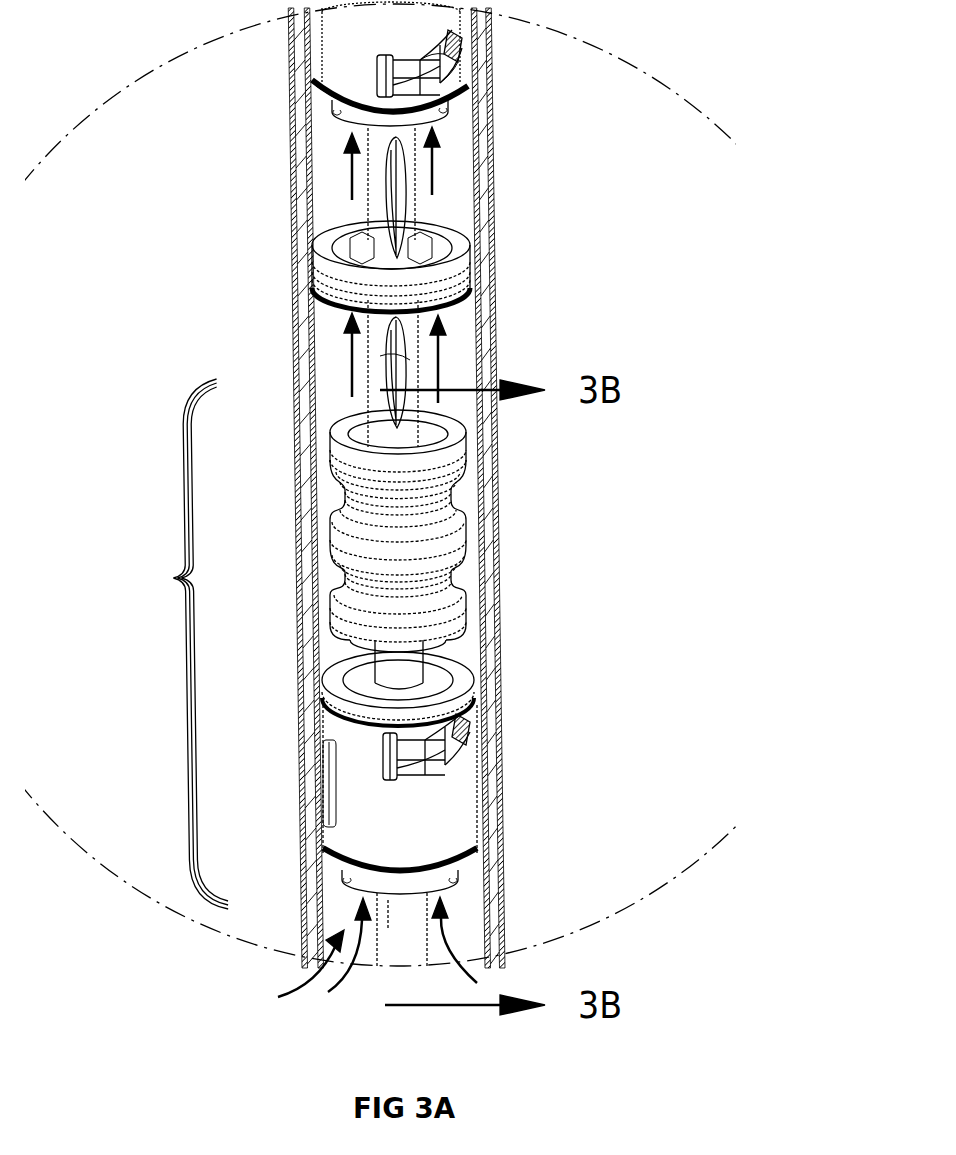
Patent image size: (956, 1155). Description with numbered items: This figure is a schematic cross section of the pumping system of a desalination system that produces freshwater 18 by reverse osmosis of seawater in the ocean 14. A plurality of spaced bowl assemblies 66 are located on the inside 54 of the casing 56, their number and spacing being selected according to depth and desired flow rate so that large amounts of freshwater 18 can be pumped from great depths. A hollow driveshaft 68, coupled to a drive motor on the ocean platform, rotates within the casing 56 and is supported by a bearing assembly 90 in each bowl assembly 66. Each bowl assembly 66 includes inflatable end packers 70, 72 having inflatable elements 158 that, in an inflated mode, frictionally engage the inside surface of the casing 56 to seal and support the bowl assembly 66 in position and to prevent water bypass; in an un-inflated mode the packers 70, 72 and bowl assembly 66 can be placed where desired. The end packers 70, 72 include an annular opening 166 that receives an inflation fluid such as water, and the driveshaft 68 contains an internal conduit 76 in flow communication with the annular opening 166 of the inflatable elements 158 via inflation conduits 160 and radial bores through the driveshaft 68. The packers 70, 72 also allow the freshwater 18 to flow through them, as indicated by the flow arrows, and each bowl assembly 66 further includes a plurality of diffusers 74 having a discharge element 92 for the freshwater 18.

The ocean 14 is at (612, 170).
The freshwater 18 is at (437, 173).
The inside 54 is at (457, 312).
The casing 56 is at (493, 275).
The bowl assembly 66 is at (185, 644).
The hollow driveshaft 68 is at (480, 128).
The inflatable end packer 70 is at (465, 863).
The inflatable end packer 72 is at (493, 110).
The diffuser 74 is at (470, 510).
The internal conduit 76 is at (493, 62).
The bearing assembly 90 is at (493, 243).
The discharge element 92 is at (493, 413).
The inflatable element 158 is at (493, 16).
The inflation conduit 160 is at (493, 78).
The annular opening 166 is at (493, 37).